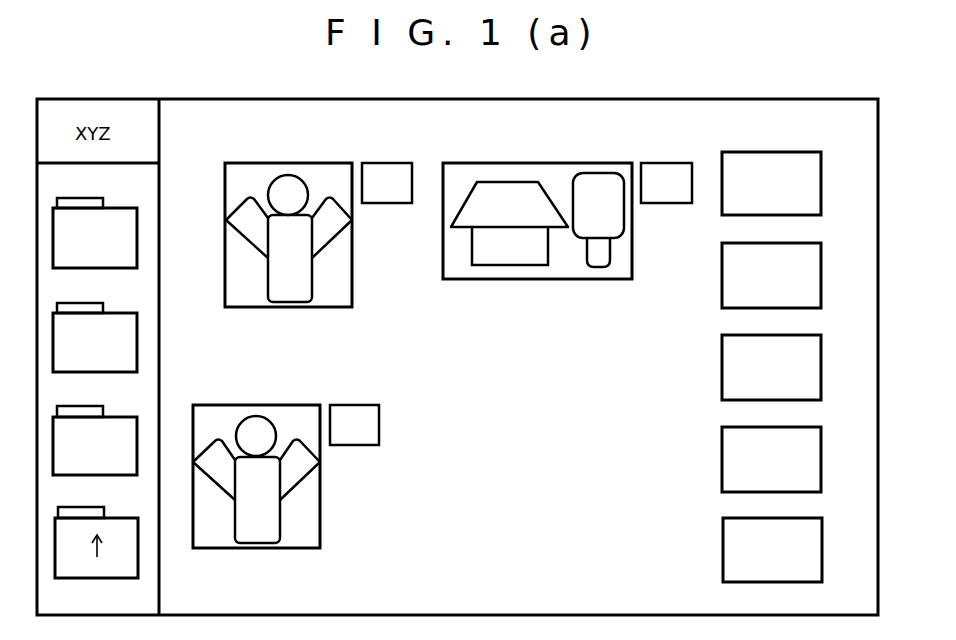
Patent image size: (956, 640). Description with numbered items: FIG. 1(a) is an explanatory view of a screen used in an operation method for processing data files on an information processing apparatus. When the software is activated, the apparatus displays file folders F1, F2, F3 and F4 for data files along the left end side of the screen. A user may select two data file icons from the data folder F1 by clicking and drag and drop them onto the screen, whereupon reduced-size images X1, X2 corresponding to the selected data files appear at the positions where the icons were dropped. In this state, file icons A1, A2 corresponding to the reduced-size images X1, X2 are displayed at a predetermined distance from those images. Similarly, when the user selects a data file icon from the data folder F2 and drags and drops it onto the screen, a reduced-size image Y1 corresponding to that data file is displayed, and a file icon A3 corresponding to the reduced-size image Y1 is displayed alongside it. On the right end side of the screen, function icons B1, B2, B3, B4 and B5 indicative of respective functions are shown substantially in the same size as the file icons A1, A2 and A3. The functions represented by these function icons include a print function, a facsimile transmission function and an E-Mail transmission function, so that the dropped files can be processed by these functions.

The file folder F1 is at (125, 208).
The file folder F2 is at (125, 313).
The file folder F3 is at (125, 417).
The file folder F4 is at (125, 518).
The reduced-size image X1 is at (258, 163).
The reduced-size image X2 is at (226, 405).
The reduced-size image Y1 is at (472, 163).
The file icon A1 is at (387, 163).
The file icon A2 is at (354, 405).
The file icon A3 is at (667, 163).
The function icon B1 is at (821, 187).
The function icon B2 is at (821, 278).
The function icon B3 is at (821, 370).
The function icon B4 is at (821, 462).
The function icon B5 is at (822, 552).